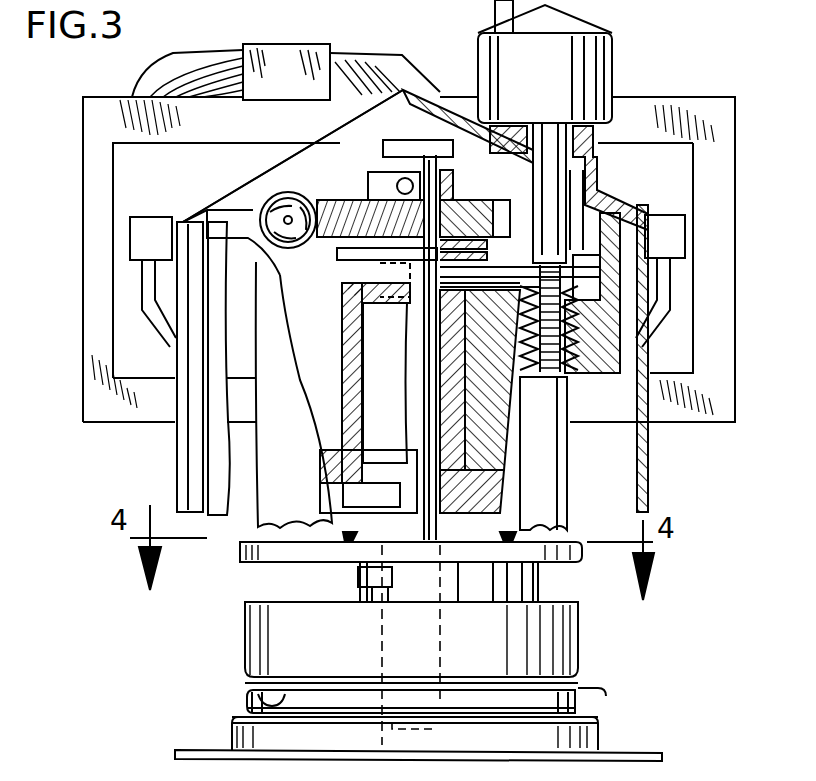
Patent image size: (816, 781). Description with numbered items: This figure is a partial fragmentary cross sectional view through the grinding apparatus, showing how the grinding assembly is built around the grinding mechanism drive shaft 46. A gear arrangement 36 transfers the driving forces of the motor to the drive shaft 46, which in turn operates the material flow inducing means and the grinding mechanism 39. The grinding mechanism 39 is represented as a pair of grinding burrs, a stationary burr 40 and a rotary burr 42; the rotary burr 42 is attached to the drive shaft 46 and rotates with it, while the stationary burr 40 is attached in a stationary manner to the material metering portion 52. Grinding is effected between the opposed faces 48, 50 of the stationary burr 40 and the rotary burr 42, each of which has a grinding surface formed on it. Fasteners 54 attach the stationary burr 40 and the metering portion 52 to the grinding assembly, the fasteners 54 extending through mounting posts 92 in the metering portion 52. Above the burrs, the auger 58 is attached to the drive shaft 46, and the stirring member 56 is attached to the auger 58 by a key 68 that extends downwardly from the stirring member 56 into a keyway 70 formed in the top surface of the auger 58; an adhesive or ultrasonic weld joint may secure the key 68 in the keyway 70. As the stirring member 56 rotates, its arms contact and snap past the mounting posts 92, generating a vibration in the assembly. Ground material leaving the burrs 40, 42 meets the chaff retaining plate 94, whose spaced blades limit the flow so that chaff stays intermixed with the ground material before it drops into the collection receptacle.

The gear arrangement 36 is at (336, 184).
The grinding mechanism 39 is at (222, 708).
The stationary burr 40 is at (250, 702).
The rotary burr 42 is at (232, 742).
The grinding mechanism drive shaft 46 is at (400, 530).
The opposed face 48 is at (262, 693).
The opposed face 50 is at (578, 690).
The material metering portion 52 is at (250, 647).
The fasteners 54 is at (524, 530).
The stirring member 56 is at (242, 549).
The auger 58 is at (372, 595).
The key 68 is at (362, 597).
The keyway 70 is at (372, 571).
The mounting posts 92 is at (540, 583).
The chaff retaining plate 94 is at (187, 753).